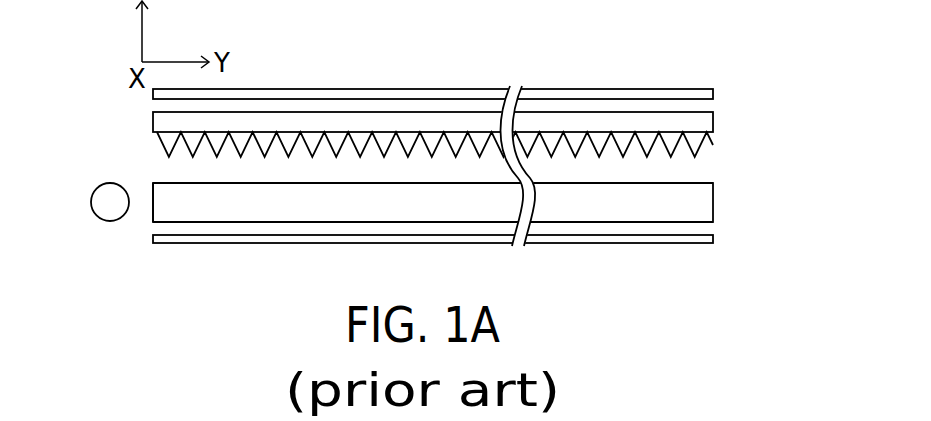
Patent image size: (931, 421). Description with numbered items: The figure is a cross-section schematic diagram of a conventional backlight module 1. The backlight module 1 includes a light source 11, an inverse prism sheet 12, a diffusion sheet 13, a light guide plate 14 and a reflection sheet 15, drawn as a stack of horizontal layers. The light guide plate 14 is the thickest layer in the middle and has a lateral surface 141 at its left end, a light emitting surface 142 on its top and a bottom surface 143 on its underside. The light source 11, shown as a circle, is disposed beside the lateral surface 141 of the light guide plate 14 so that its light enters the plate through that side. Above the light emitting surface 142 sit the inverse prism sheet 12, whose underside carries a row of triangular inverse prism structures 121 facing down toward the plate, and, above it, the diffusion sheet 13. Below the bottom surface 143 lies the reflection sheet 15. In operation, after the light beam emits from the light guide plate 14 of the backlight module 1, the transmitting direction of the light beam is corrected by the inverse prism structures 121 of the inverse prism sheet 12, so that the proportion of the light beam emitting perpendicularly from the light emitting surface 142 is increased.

The backlight module 1 is at (790, 30).
The light source 11 is at (103, 205).
The inverse prism sheet 12 is at (439, 136).
The inverse prism structures 121 is at (705, 136).
The diffusion sheet 13 is at (713, 95).
The light guide plate 14 is at (705, 205).
The lateral surface 141 is at (153, 208).
The light emitting surface 142 is at (624, 182).
The bottom surface 143 is at (643, 223).
The reflection sheet 15 is at (713, 239).